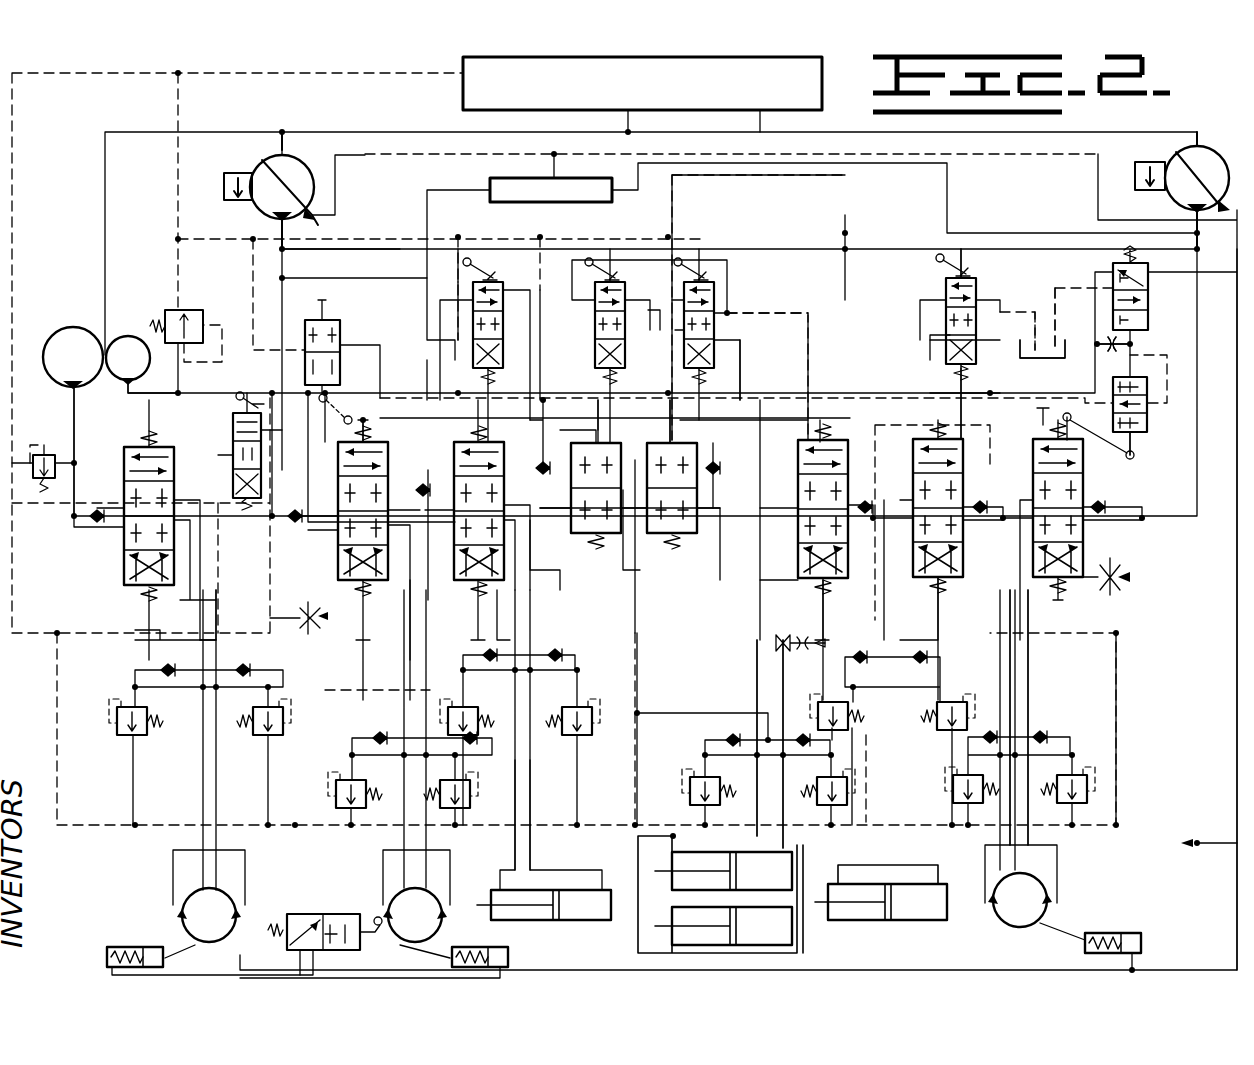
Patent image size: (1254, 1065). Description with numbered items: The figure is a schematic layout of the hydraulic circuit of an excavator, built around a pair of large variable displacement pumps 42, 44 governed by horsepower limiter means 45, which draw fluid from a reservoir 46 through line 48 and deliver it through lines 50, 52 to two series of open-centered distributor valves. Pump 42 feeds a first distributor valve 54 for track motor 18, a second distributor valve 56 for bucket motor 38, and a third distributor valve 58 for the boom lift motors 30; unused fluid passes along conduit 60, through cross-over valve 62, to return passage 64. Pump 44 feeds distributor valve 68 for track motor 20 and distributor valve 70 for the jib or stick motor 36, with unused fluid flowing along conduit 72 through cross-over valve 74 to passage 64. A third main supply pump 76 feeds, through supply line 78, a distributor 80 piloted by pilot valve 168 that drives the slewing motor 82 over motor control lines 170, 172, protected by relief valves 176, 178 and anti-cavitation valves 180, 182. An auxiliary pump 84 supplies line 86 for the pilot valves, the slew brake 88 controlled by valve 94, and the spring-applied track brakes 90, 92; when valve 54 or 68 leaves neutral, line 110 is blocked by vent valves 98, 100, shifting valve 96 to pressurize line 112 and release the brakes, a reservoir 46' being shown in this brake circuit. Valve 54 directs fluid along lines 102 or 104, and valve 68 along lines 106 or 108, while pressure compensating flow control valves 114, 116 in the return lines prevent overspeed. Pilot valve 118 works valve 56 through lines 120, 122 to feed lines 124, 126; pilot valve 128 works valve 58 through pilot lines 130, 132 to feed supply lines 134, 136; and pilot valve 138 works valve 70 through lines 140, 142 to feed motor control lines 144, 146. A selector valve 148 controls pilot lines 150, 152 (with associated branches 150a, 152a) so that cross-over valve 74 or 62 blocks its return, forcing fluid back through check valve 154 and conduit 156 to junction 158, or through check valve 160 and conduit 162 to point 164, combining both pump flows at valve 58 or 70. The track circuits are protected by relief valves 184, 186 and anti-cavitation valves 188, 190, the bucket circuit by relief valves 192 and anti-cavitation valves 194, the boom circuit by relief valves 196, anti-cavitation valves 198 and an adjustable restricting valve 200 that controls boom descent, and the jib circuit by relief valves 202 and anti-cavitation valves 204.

The track motor 18 is at (1028, 925).
The track motor 20 is at (430, 895).
The boom lift motors 30 is at (790, 920).
The jib or stick motor 36 is at (590, 920).
The bucket motor 38 is at (938, 920).
The variable displacement pump 42 is at (1215, 150).
The variable displacement pump 44 is at (258, 165).
The horsepower limiter means 45 is at (492, 186).
The tank or reservoir 46 is at (604, 86).
The reservoir 46' is at (1030, 316).
The line 48 is at (768, 125).
The line 50 is at (1190, 345).
The line 52 is at (282, 262).
The first distributor valve 54 is at (1083, 476).
The second distributor valve 56 is at (963, 455).
The third distributor valve 58 is at (798, 555).
The conduit 60 is at (690, 533).
The cross-over valve 62 is at (640, 570).
The return passage 64 is at (632, 630).
The first distributor valve 68 is at (338, 560).
The second distributor valve 70 is at (503, 455).
The conduit 72 is at (560, 590).
The cross-over valve 74 is at (586, 440).
The third main supply pump 76 is at (74, 326).
The supply line 78 is at (74, 415).
The distributor 80 is at (124, 480).
The slewing or platform rotation motor 82 is at (188, 928).
The auxiliary pump 84 is at (128, 334).
The line 86 is at (140, 393).
The slew brake 88 is at (107, 960).
The track motor brake 90 is at (1136, 933).
The track motor brake 92 is at (507, 958).
The valve 94 is at (320, 952).
The valve 96 is at (1148, 297).
The vent valve 98 is at (1147, 422).
The vent valve 100 is at (343, 300).
The line 102 is at (1015, 658).
The line 104 is at (1030, 685).
The line 106 is at (410, 636).
The line 108 is at (405, 672).
The line 110 is at (1013, 408).
The line 112 is at (1237, 605).
The pressure compensating flow control valve 114 is at (1125, 572).
The pressure compensating flow control valve 116 is at (300, 618).
The pilot valve 118 is at (946, 292).
The line 120 is at (910, 385).
The line 122 is at (930, 340).
The line 124 is at (938, 590).
The line 126 is at (828, 640).
The pilot valve 128 is at (683, 262).
The pilot line 130 is at (792, 315).
The pilot line 132 is at (737, 345).
The supply line 134 is at (757, 660).
The supply line 136 is at (783, 690).
The pilot valve 138 is at (485, 262).
The line 140 is at (447, 365).
The line 142 is at (497, 625).
The motor control line 144 is at (530, 790).
The motor control line 146 is at (515, 815).
The selector valve 148 is at (602, 262).
The pilot line 150 is at (700, 262).
The pilot line 150a is at (640, 565).
The pilot line 152 is at (540, 290).
The line 152a is at (690, 430).
The check valve 154 is at (543, 400).
The conduit 156 is at (750, 410).
The junction 158 is at (823, 600).
The check valve 160 is at (722, 470).
The conduit 162 is at (460, 395).
The point 164 is at (432, 418).
The pilot valve 168 is at (247, 392).
The motor control line 170 is at (200, 610).
The motor control line 172 is at (200, 575).
The relief valve 176 is at (258, 735).
The relief valve 178 is at (132, 735).
The anti-cavitation valve 180 is at (240, 650).
The anti-cavitation valve 182 is at (170, 665).
The high pressure relief valve 184 is at (450, 810).
The high pressure relief valve 186 is at (368, 812).
The anti-cavitation valve 188 is at (400, 720).
The anti-cavitation valve 190 is at (388, 742).
The relief valve 192 is at (950, 712).
The anti-cavitation valve 194 is at (922, 655).
The relief valve 196 is at (720, 805).
The anti-cavitation valve 198 is at (733, 735).
The adjustable restricting valve 200 is at (776, 640).
The pressure relief valve 202 is at (478, 728).
The anti-cavitation valve 204 is at (565, 655).